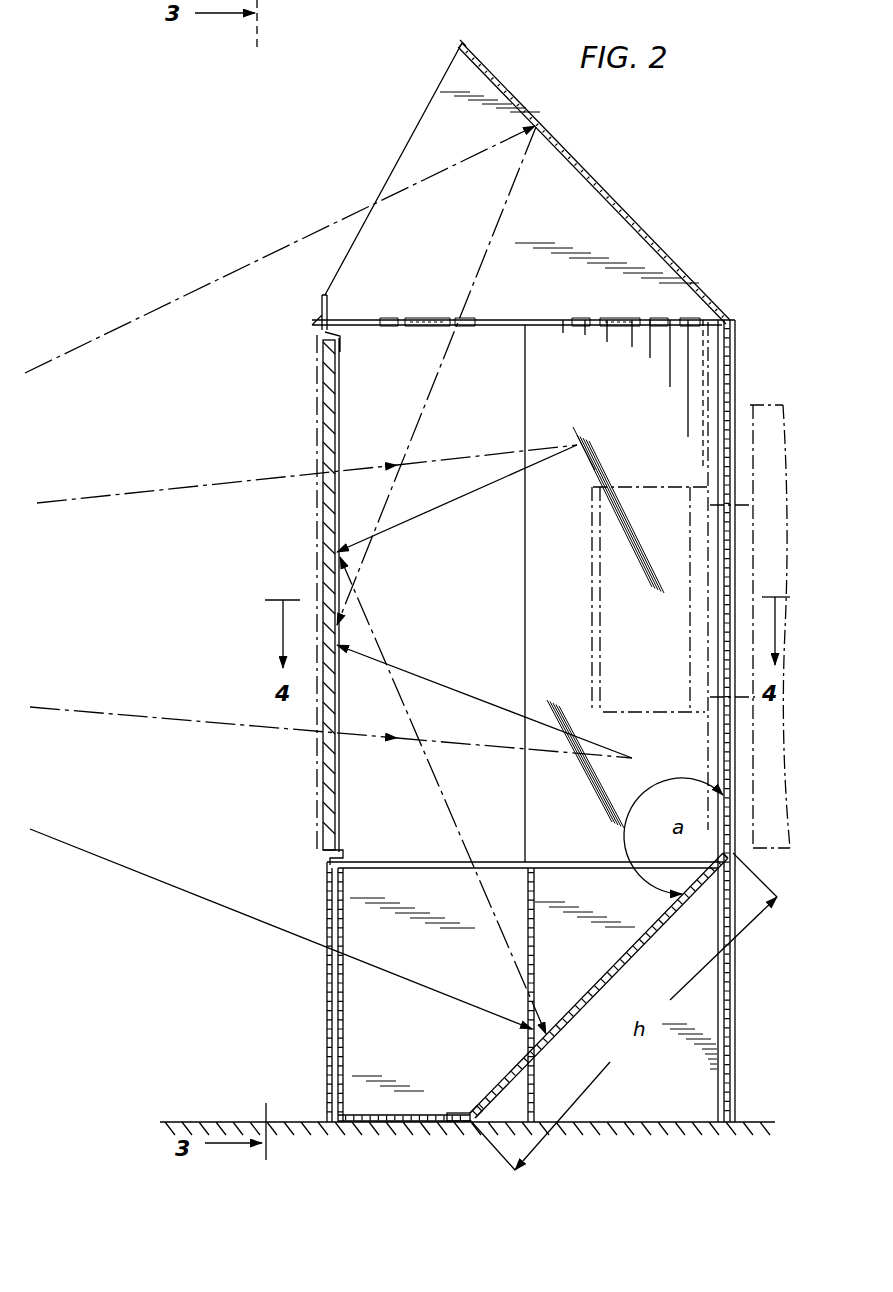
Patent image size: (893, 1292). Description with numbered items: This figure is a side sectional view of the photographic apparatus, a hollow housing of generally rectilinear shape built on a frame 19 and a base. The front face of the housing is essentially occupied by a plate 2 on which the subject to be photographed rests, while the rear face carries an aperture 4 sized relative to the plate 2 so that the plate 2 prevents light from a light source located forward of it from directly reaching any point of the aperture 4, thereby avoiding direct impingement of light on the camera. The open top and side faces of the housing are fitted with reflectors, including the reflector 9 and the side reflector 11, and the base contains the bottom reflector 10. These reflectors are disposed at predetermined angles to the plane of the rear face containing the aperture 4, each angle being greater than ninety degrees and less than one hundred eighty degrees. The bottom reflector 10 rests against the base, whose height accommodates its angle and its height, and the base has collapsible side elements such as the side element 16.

The plate 2 is at (335, 443).
The aperture 4 is at (734, 364).
The reflector 9 is at (626, 213).
The bottom reflector 10 is at (638, 948).
The side reflector 11 is at (540, 397).
The side element of the base 16 is at (707, 1023).
The frame 19 is at (325, 876).